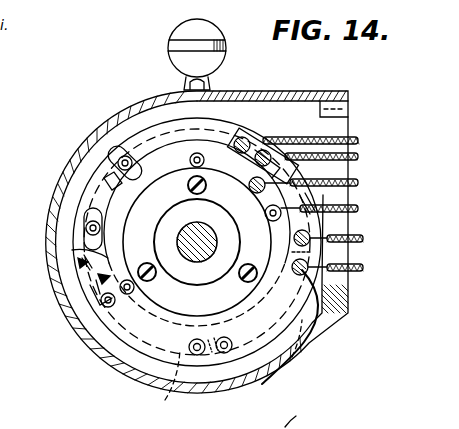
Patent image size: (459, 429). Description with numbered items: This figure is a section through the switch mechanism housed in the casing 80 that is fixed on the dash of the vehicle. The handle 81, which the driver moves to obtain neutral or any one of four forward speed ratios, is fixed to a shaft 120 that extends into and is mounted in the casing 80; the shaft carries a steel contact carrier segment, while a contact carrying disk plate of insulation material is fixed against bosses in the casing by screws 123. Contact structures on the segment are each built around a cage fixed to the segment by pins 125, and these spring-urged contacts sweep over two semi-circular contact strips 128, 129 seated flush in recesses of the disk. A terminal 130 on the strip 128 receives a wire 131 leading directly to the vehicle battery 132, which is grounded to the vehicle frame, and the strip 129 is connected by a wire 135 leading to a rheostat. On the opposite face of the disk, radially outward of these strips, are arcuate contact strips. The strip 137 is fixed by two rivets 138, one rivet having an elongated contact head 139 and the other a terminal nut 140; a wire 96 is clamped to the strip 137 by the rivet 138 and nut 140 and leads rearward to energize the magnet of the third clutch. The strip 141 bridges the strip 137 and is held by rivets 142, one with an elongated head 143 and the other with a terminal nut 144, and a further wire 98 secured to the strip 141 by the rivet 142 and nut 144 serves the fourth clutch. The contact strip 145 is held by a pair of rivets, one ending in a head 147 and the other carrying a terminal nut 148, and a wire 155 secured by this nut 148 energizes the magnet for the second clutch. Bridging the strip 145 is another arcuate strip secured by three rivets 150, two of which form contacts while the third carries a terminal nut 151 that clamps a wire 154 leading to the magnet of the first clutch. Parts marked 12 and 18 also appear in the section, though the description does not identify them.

The frame 12 is at (82, 258).
The base plate 18 is at (95, 283).
The casing 80 is at (80, 345).
The handle 81 is at (188, 62).
The wire 96 is at (360, 139).
The contact wire 98 is at (362, 156).
The shaft 120 is at (212, 230).
The screws 123 is at (190, 187).
The pins 125 is at (305, 421).
The semi-circular contact strip 128 is at (102, 226).
The semi-circular contact strip 129 is at (157, 314).
The terminal 130 is at (112, 242).
The wire 131 is at (363, 182).
The vehicle battery 132 is at (135, 288).
The wire 135 is at (364, 208).
The arcuate contact strip 137 is at (150, 137).
The rivets 138 is at (118, 158).
The elongated contact head 139 is at (108, 182).
The terminal nut 140 is at (236, 138).
The arcuate contact strip 141 is at (85, 184).
The rivets 142 is at (80, 216).
The elongated head 143 is at (72, 252).
The terminal nut 144 is at (263, 138).
The contact strip 145 is at (311, 370).
The head 147 is at (226, 354).
The terminal nut 148 is at (306, 326).
The rivets 150 is at (104, 304).
The terminal nut 151 is at (352, 236).
The wire 154 is at (365, 238).
The wire 155 is at (366, 267).